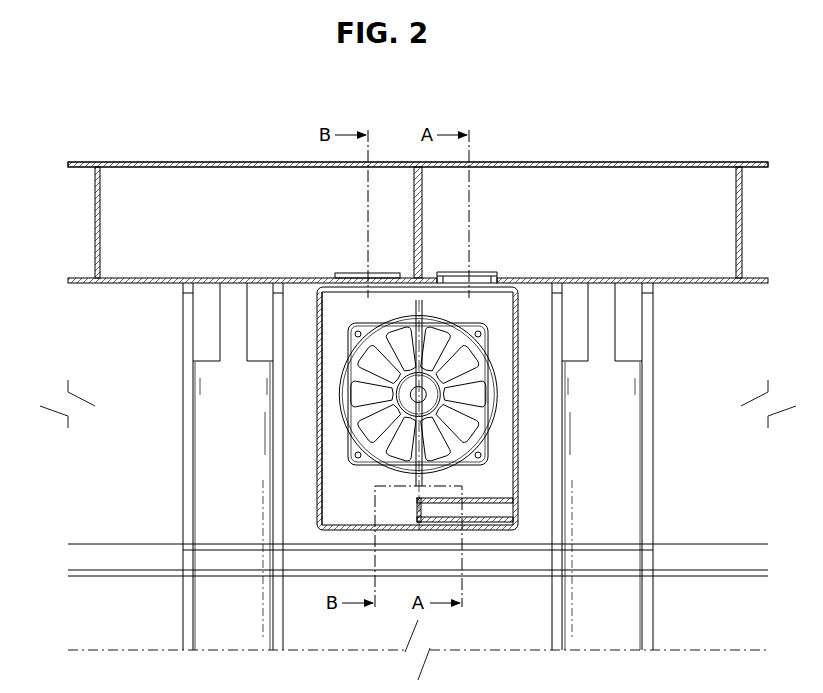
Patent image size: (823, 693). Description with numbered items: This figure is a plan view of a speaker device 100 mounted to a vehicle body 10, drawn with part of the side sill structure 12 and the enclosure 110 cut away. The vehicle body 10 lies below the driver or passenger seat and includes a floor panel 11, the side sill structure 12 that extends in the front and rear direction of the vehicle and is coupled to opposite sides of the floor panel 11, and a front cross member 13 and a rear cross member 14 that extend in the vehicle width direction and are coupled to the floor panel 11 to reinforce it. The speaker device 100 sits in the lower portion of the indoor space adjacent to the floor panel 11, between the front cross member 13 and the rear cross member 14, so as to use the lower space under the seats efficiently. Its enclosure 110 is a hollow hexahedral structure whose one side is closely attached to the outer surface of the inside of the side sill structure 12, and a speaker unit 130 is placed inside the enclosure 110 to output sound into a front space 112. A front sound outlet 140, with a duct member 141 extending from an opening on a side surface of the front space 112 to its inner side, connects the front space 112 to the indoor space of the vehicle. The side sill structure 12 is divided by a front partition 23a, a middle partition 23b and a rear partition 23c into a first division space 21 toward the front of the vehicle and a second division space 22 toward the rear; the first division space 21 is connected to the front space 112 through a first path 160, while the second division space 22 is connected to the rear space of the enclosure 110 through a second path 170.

The vehicle body 10 is at (543, 165).
The floor panel 11 is at (90, 470).
The side sill structure 12 is at (236, 162).
The front cross member 13 is at (630, 607).
The rear cross member 14 is at (205, 607).
The first division space 21 is at (636, 204).
The second division space 22 is at (188, 204).
The front partition 23a is at (736, 190).
The middle partition 23b is at (413, 193).
The rear partition 23c is at (100, 190).
The speaker device 100 is at (416, 403).
The enclosure 110 is at (518, 477).
The front space 112 is at (336, 480).
The speaker unit 130 is at (483, 417).
The front sound outlet 140 is at (497, 524).
The duct member 141 is at (473, 525).
The first path 160 is at (487, 268).
The second path 170 is at (347, 269).